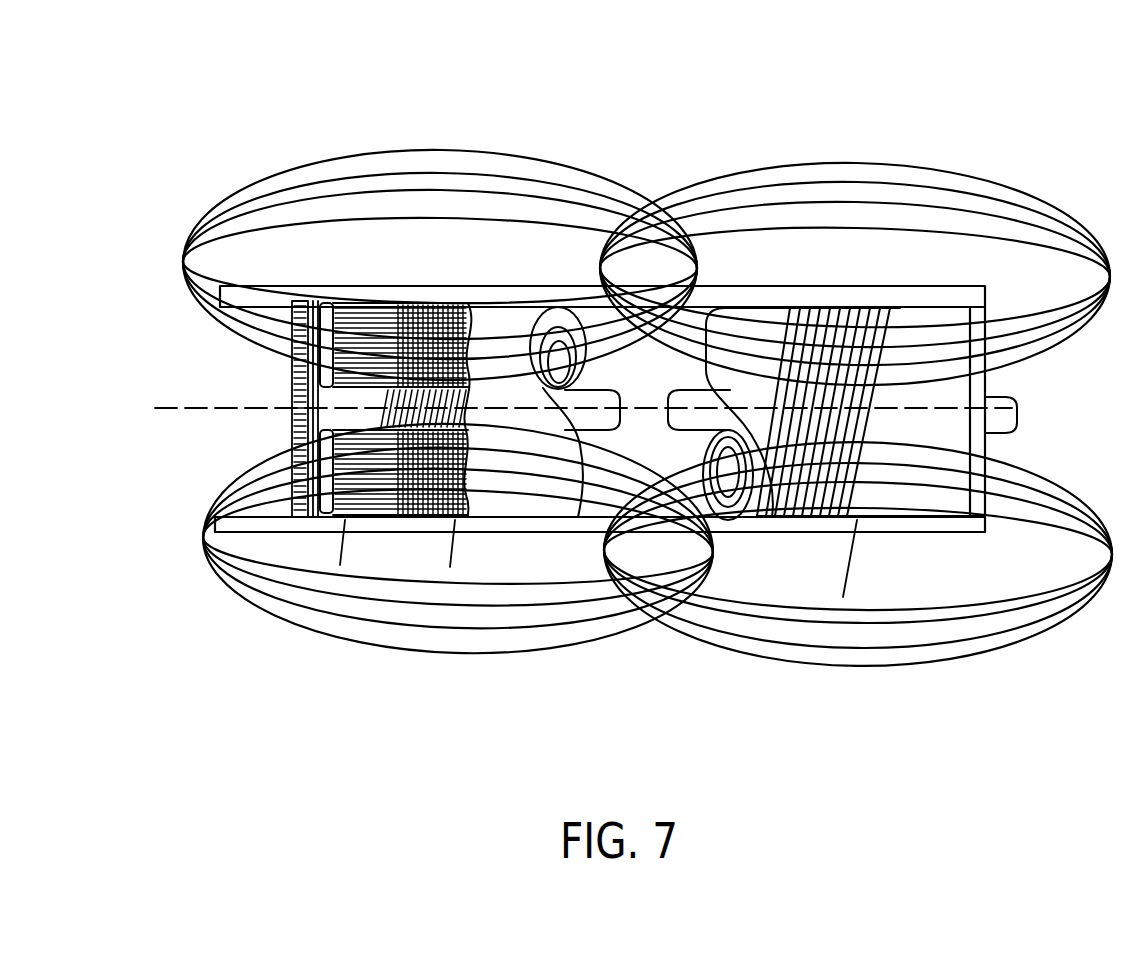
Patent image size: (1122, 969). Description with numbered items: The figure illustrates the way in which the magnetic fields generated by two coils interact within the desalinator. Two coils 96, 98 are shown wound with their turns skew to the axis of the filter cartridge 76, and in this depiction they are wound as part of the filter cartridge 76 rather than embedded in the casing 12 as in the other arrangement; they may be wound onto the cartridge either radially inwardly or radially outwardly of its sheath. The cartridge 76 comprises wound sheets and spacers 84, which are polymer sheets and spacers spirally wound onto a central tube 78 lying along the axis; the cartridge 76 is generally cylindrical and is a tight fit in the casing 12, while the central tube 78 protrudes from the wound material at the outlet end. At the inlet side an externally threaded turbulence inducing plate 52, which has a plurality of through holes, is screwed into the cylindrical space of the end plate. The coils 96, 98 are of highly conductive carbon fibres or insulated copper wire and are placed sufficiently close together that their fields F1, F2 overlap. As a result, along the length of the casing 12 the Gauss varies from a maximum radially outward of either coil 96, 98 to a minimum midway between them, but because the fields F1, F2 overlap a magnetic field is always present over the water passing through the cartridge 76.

The casing 12 is at (515, 533).
The turbulence inducing plate 52 is at (292, 385).
The filter cartridge 76 is at (590, 504).
The central tube 78 is at (672, 395).
The wound sheets and spacers 84 is at (333, 517).
The coil 96 is at (470, 302).
The coil 98 is at (888, 312).
The magnetic field F1 is at (550, 158).
The magnetic field F2 is at (777, 168).